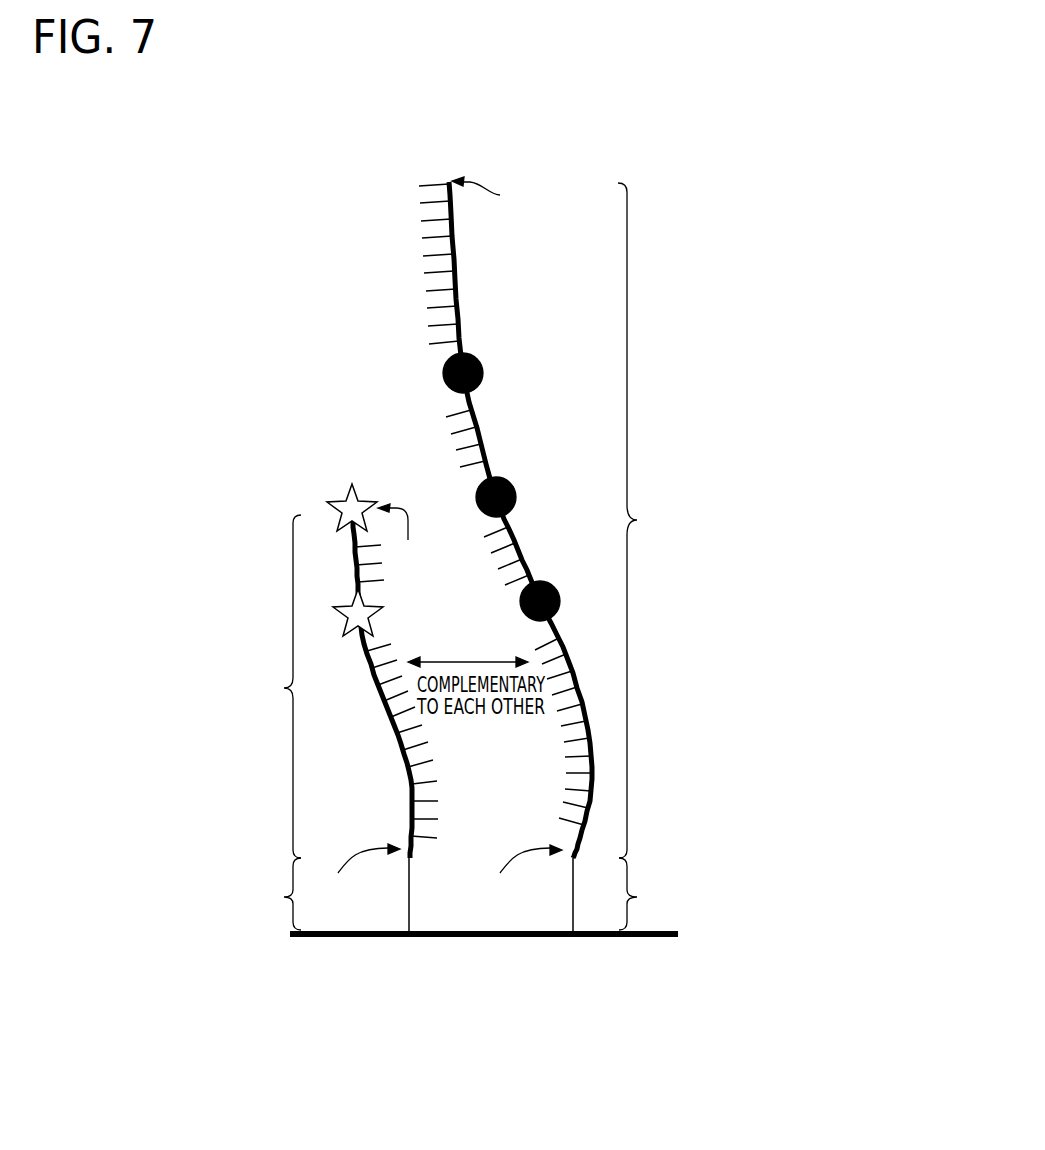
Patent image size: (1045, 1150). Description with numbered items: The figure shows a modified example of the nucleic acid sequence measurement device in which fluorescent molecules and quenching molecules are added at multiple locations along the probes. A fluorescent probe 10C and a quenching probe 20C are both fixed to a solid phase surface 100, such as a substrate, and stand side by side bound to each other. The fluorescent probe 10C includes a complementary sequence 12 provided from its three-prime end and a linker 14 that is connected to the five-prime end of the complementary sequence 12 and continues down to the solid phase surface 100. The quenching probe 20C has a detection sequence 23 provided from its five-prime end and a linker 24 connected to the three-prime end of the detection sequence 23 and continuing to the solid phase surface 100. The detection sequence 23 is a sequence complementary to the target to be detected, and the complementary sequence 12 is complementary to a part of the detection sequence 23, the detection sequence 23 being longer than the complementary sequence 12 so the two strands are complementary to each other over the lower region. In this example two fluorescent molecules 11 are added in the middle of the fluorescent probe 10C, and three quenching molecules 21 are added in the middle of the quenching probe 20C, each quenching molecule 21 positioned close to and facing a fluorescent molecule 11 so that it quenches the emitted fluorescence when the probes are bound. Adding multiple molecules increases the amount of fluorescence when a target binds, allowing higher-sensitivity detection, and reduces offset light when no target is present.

The solid phase surface 100 is at (527, 937).
The fluorescent probe 10C is at (307, 728).
The fluorescent molecule 11 is at (336, 494).
The complementary sequence 12 is at (284, 688).
The linker 14 is at (425, 862).
The quenching probe 20C is at (681, 586).
The quenching molecule 21 is at (484, 372).
The detection sequence 23 is at (637, 520).
The linker 24 is at (637, 897).